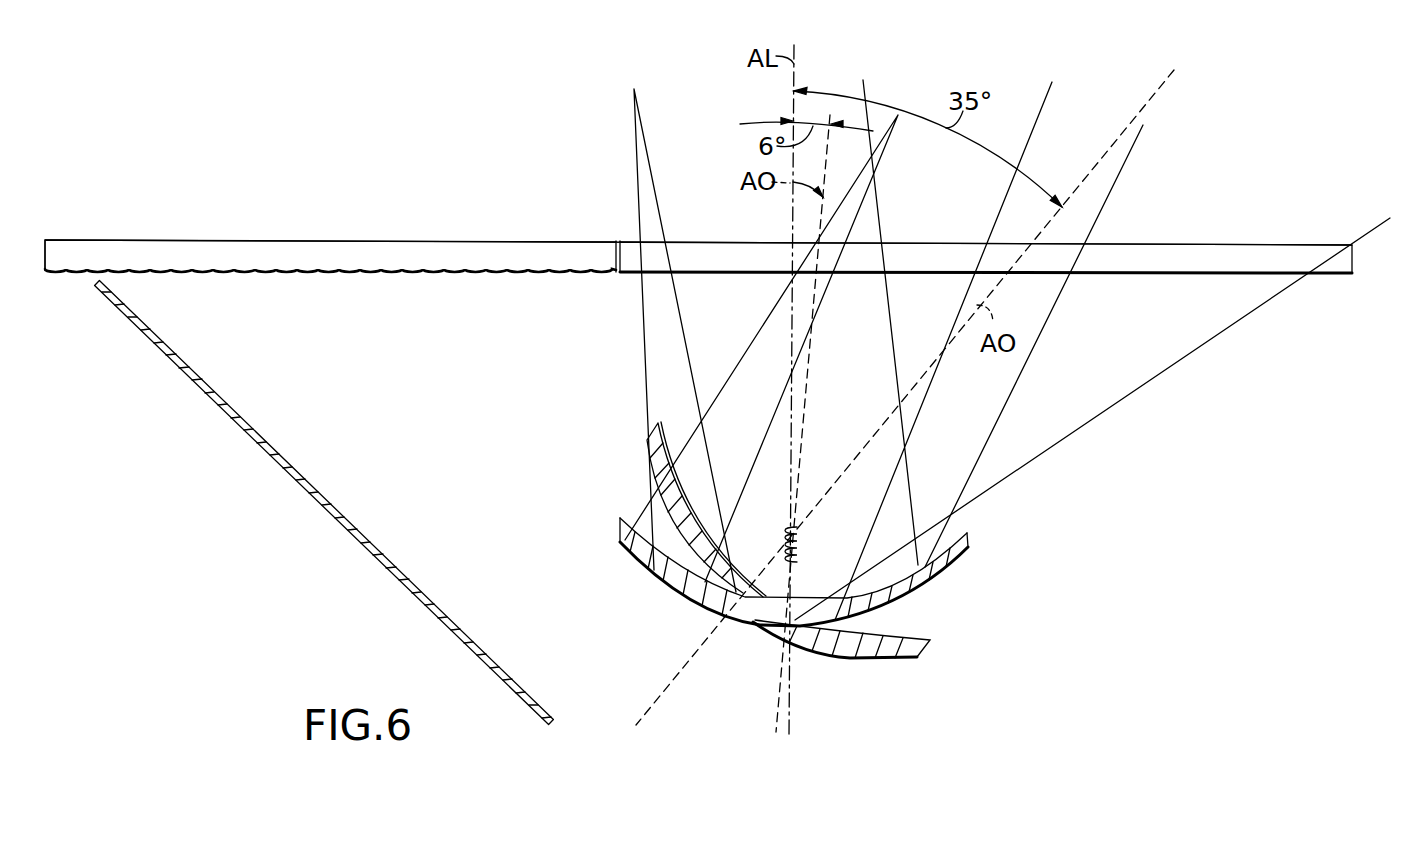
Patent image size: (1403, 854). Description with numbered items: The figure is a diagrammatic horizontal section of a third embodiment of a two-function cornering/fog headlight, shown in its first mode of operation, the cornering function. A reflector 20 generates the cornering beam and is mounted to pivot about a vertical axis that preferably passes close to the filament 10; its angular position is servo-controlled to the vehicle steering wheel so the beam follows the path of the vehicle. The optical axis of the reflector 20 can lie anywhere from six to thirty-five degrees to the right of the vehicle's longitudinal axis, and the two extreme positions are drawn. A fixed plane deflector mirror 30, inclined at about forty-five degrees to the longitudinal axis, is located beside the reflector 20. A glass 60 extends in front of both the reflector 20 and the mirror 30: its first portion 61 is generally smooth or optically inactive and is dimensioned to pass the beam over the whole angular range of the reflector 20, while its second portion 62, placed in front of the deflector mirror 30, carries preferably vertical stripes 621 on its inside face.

The filament 10 is at (790, 528).
The reflector 20 is at (623, 518).
The deflector mirror 30 is at (327, 500).
The glass 60 is at (428, 232).
The first portion 61 is at (1183, 247).
The second portion 62 is at (323, 243).
The stripes 621 is at (427, 271).